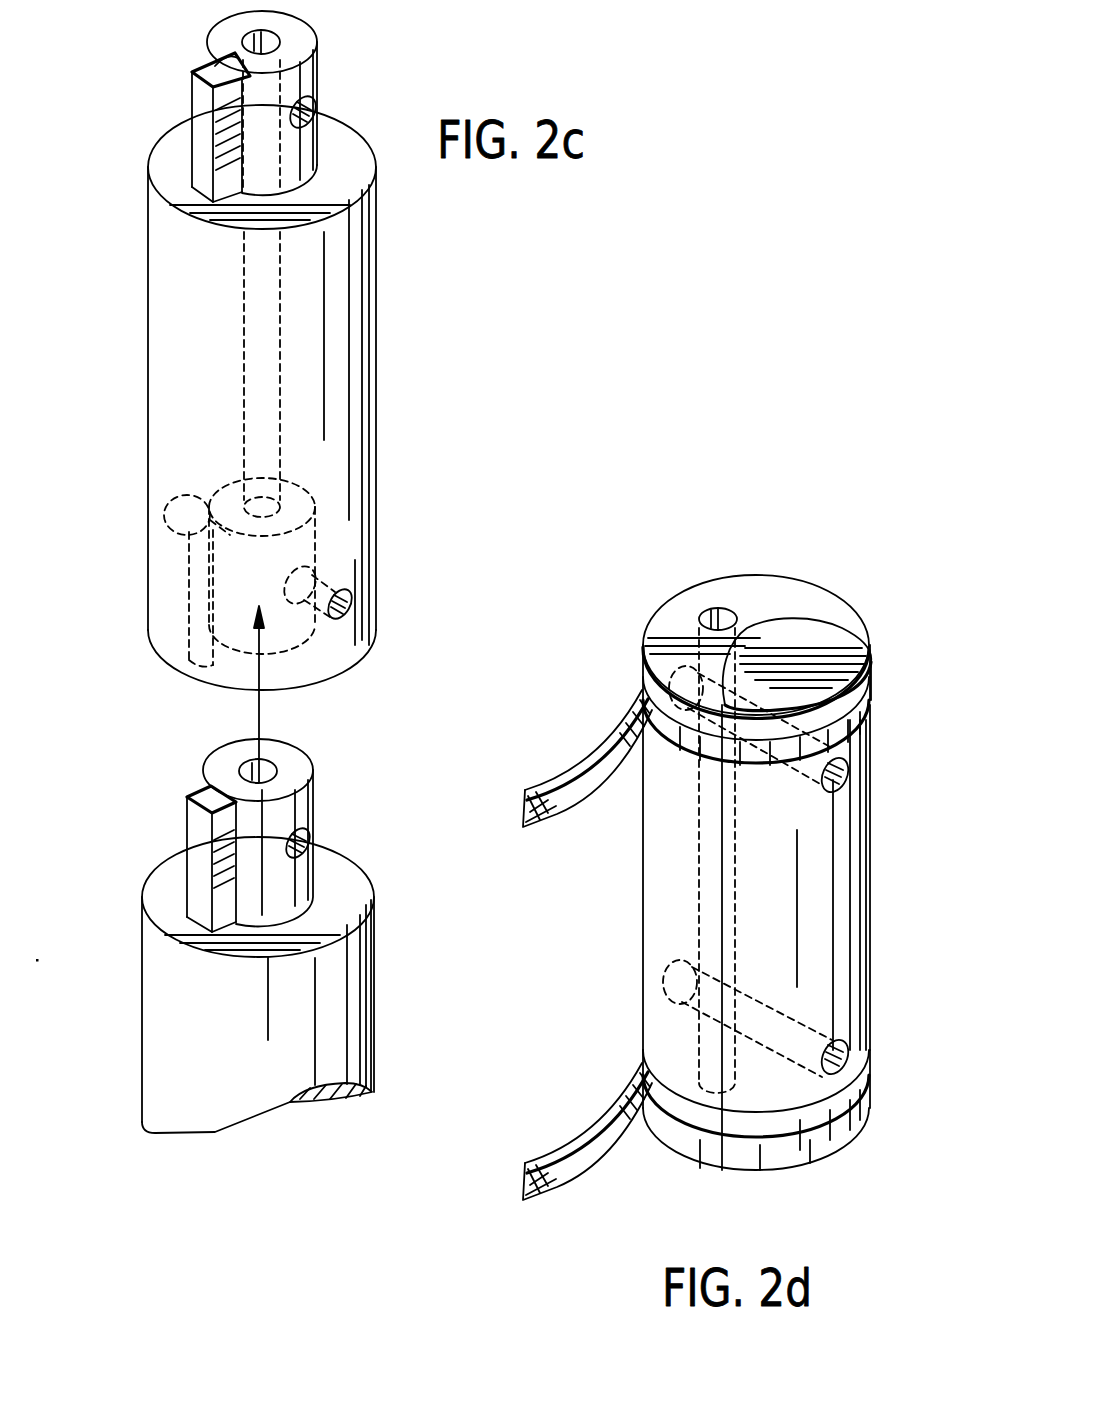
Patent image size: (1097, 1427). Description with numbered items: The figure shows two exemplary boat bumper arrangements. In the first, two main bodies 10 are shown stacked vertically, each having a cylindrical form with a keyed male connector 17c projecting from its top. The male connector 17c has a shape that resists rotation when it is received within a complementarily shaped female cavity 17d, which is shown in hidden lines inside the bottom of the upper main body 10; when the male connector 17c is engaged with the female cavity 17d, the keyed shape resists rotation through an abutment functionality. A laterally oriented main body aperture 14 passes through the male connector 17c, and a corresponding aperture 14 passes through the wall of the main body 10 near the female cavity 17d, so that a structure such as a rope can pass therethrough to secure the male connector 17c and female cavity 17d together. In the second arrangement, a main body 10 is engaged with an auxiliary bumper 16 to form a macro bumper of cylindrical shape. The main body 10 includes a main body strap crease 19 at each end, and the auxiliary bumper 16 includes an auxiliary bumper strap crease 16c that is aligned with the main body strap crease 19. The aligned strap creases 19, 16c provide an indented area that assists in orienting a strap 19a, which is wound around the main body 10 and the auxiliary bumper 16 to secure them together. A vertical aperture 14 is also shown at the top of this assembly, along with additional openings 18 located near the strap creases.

In FIG. 2c, the main body 10 is at (114, 81).
In FIG. 2d, the main body 10 is at (590, 636).
In FIG. 2c, the main body aperture 14 is at (312, 112).
In FIG. 2d, the main body aperture 14 is at (703, 612).
In FIG. 2d, the auxiliary bumper 16 is at (865, 902).
In FIG. 2d, the auxiliary bumper strap crease 16c is at (870, 700).
In FIG. 2c, the male connector 17c is at (306, 32).
In FIG. 2c, the female cavity 17d is at (330, 500).
In FIG. 2d, the locking pin hole 18 is at (654, 677).
In FIG. 2d, the main body strap crease 19 is at (681, 745).
In FIG. 2d, the strap 19a is at (537, 788).